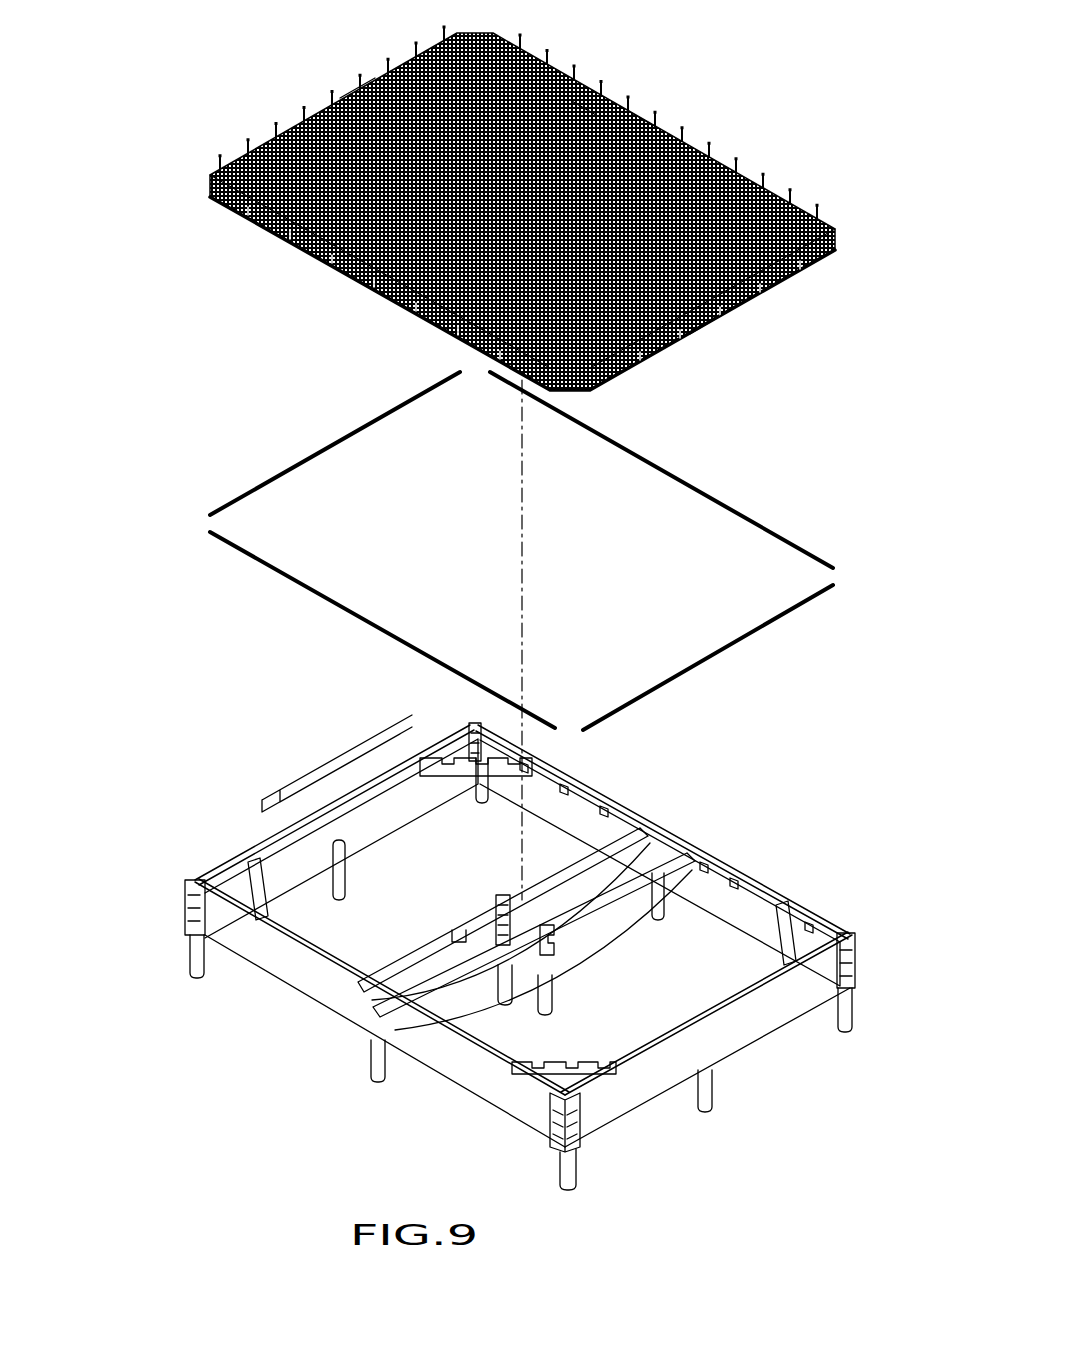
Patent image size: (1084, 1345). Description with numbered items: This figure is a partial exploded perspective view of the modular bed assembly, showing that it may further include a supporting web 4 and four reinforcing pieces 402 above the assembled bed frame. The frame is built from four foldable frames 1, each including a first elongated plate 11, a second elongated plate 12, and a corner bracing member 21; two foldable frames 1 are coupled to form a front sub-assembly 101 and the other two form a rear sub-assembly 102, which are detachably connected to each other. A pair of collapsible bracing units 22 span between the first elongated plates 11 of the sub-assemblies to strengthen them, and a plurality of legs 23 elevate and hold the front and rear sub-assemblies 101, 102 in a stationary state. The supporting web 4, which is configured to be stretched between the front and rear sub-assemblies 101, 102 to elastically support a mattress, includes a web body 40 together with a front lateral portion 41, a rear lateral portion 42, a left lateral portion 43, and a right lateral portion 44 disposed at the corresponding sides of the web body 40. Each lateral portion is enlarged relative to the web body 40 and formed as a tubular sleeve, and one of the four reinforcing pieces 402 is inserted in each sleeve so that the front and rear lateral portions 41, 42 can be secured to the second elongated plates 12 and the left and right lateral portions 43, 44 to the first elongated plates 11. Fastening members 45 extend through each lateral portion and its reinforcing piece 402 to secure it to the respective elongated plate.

The supporting web 4 is at (806, 188).
The web body 40 is at (583, 112).
The front lateral portion 41 is at (358, 92).
The rear lateral portion 42 is at (710, 323).
The left lateral portion 43 is at (366, 284).
The right lateral portion 44 is at (643, 120).
The fastening member 45 is at (247, 138).
The reinforcing piece 402 is at (293, 466).
The front sub-assembly 101 is at (499, 953).
The rear sub-assembly 102 is at (777, 1112).
The foldable frame 1 is at (462, 721).
The first elongated plate 11 is at (578, 822).
The second elongated plate 12 is at (300, 856).
The corner bracing member 21 is at (448, 792).
The collapsible bracing unit 22 is at (452, 918).
The leg 23 is at (716, 1092).